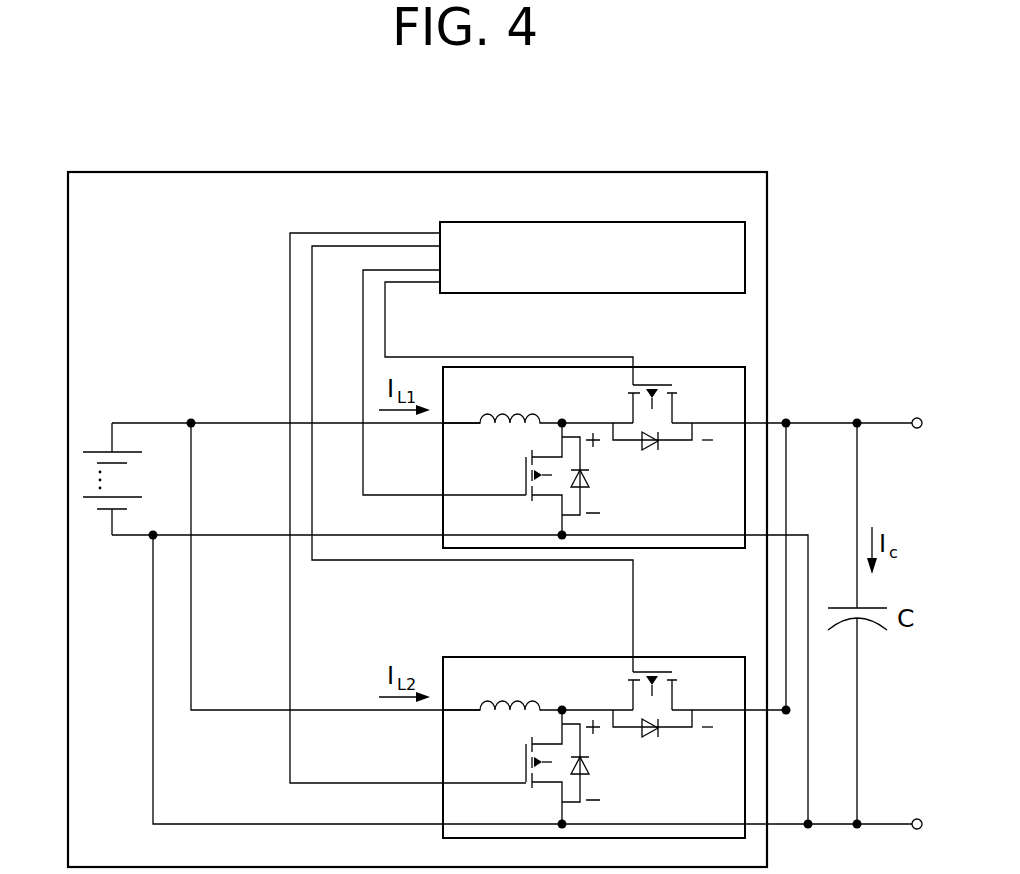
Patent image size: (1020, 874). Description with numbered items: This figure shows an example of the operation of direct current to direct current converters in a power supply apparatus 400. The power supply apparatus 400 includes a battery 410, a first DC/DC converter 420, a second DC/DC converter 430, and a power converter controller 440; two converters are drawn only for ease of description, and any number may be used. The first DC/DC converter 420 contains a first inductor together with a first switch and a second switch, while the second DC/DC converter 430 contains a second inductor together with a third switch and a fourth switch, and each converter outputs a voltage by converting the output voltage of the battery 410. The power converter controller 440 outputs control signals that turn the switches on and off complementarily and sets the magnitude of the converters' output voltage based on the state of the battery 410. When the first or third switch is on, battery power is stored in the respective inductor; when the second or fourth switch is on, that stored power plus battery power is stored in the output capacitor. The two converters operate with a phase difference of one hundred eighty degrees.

The power supply apparatus 400 is at (408, 171).
The battery 410 is at (99, 450).
The first DC/DC converter 420 is at (673, 366).
The second DC/DC converter 430 is at (673, 657).
The power converter controller 440 is at (673, 221).